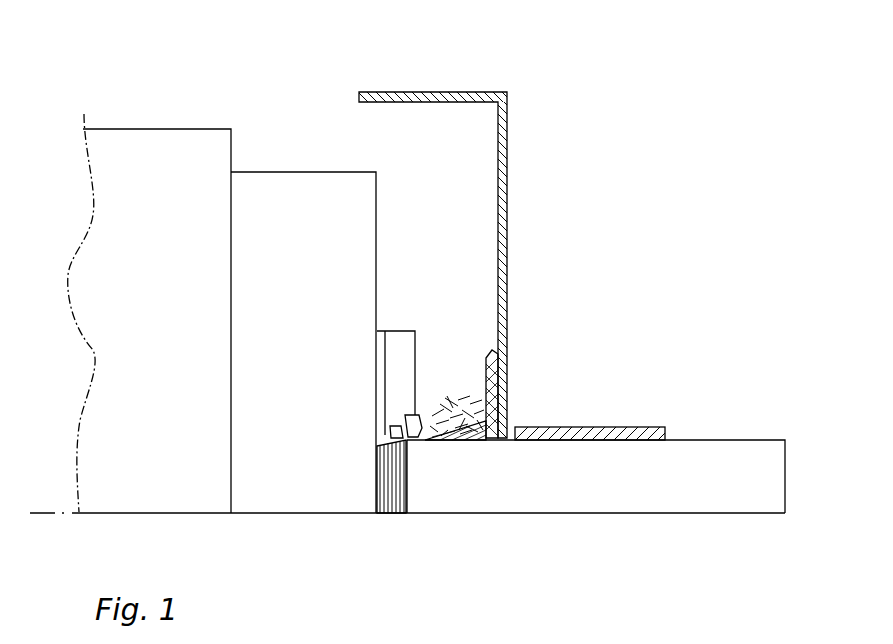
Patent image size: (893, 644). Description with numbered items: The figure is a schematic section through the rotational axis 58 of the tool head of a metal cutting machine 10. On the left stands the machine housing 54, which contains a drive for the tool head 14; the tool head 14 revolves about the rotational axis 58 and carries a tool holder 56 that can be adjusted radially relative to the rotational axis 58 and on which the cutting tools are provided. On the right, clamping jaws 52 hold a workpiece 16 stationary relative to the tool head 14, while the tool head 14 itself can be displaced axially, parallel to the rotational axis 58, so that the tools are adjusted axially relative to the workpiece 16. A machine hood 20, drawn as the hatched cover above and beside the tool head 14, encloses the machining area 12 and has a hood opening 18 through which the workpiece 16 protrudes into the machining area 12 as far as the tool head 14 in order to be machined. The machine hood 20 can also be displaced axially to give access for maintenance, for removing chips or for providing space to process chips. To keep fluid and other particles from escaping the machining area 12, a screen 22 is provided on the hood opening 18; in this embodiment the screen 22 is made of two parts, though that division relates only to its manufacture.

The metal cutting machine 10 is at (641, 120).
The machining area 12 is at (431, 170).
The tool head 14 is at (317, 258).
The workpiece 16 is at (607, 482).
The hood opening 18 is at (538, 392).
The machine hood 20 is at (508, 130).
The screen 22 is at (508, 418).
The clamping jaws 52 is at (640, 426).
The machine housing 54 is at (147, 230).
The tool holder 56 is at (400, 402).
The rotational axis 58 is at (462, 517).